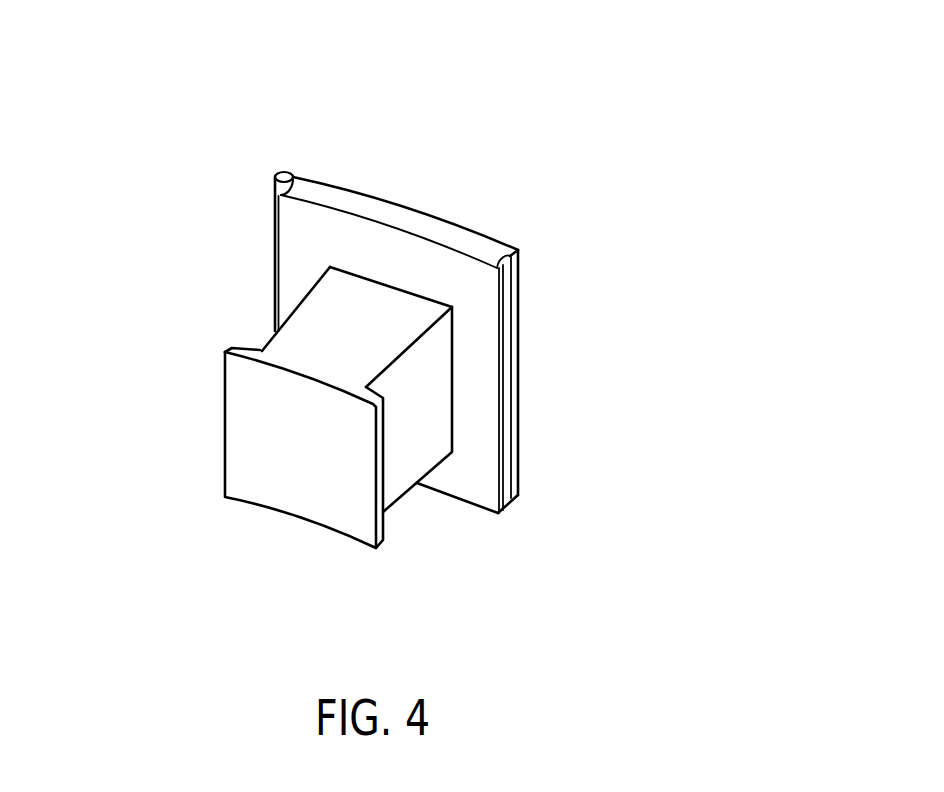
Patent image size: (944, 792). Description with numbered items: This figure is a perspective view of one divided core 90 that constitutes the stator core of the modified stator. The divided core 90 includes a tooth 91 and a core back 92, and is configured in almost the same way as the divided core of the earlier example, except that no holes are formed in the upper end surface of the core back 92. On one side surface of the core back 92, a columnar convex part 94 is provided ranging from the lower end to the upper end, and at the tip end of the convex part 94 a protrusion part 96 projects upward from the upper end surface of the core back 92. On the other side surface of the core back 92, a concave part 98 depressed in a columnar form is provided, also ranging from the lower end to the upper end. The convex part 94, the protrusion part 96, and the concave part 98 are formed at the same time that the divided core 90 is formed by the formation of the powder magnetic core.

The divided core 90 is at (463, 187).
The tooth 91 is at (327, 342).
The core back 92 is at (470, 243).
The convex part 94 is at (274, 228).
The protrusion part 96 is at (285, 171).
The concave part 98 is at (505, 299).